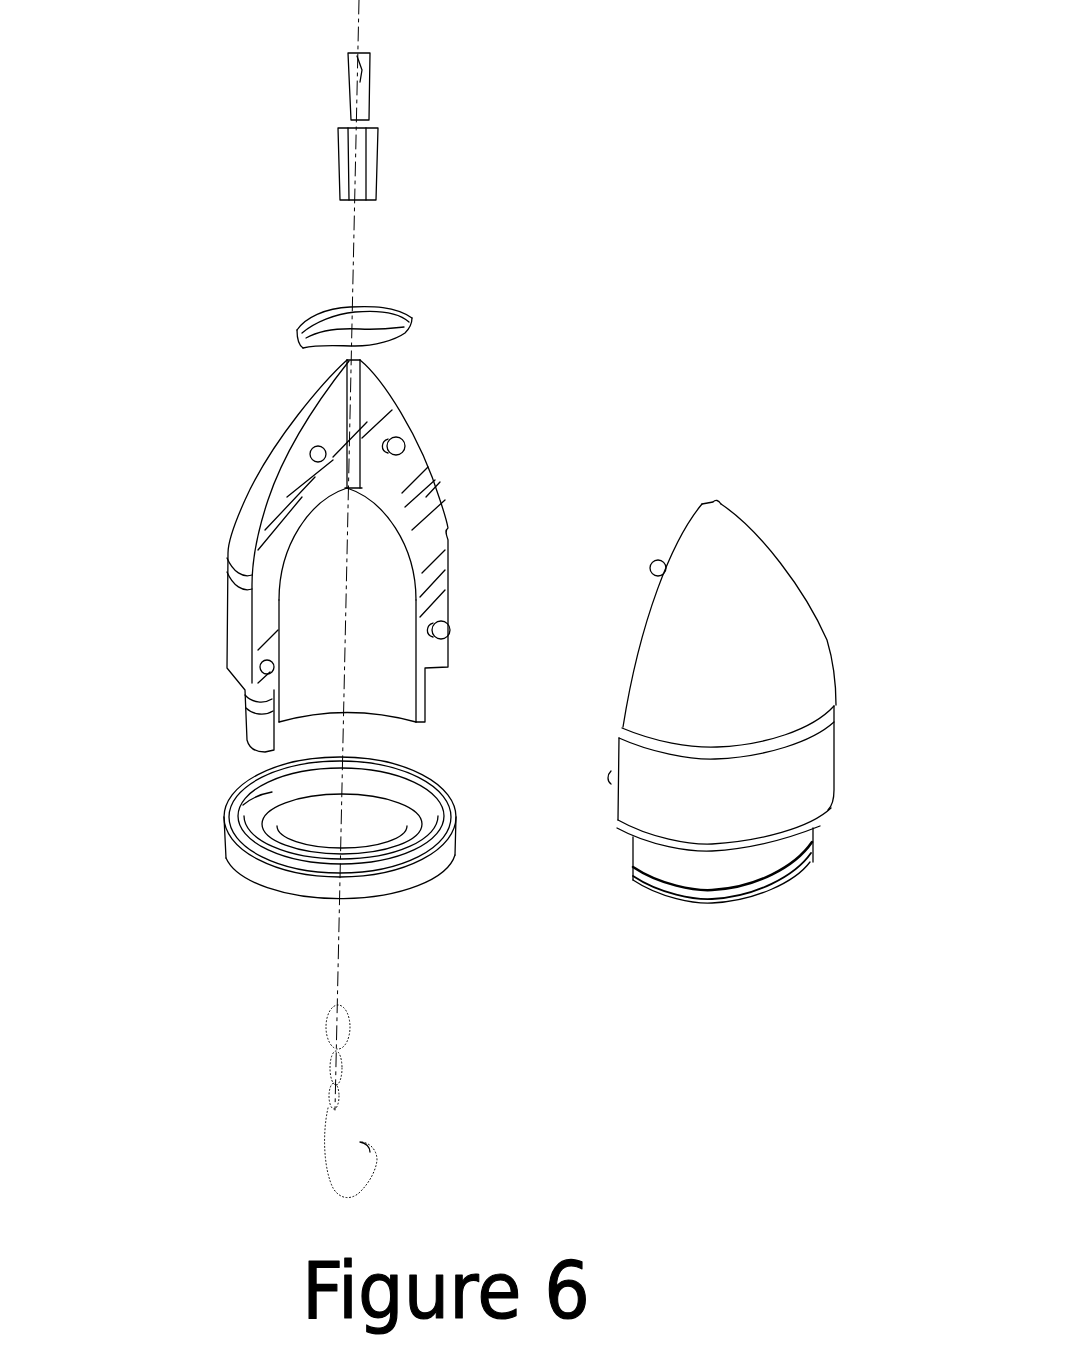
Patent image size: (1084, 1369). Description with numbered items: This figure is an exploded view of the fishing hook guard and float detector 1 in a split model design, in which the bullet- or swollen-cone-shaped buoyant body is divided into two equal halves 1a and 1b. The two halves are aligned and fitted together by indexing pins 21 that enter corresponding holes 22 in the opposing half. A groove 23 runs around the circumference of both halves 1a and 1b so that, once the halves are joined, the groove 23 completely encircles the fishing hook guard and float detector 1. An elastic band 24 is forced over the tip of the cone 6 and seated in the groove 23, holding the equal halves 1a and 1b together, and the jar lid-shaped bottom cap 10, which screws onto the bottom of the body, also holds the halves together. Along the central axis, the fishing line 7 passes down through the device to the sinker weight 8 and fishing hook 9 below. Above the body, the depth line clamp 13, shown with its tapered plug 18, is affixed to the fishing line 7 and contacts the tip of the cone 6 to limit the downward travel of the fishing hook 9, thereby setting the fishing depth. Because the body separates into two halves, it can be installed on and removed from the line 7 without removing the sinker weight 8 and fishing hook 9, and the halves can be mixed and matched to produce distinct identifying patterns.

The fishing hook guard and float detector 1 is at (833, 658).
The equal half 1a is at (705, 663).
The equal half 1b is at (433, 490).
The tip of the cone 6 is at (312, 388).
The fishing line 7 is at (353, 274).
The sinker weight 8 is at (360, 1033).
The fishing hook 9 is at (320, 1176).
The bottom cap 10 is at (428, 875).
The depth line clamp 13 is at (310, 167).
The tapered plug 18 is at (388, 90).
The indexing pins 21 is at (405, 443).
The holes 22 is at (310, 455).
The groove 23 is at (228, 576).
The elastic band 24 is at (413, 315).